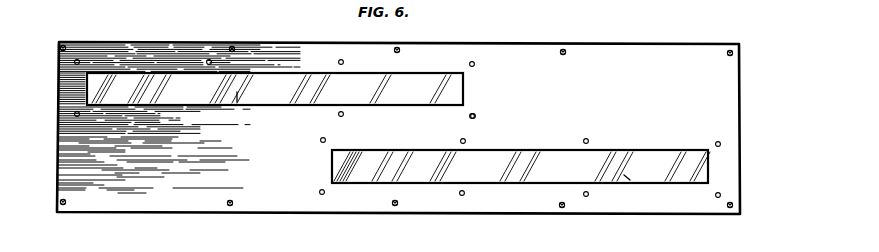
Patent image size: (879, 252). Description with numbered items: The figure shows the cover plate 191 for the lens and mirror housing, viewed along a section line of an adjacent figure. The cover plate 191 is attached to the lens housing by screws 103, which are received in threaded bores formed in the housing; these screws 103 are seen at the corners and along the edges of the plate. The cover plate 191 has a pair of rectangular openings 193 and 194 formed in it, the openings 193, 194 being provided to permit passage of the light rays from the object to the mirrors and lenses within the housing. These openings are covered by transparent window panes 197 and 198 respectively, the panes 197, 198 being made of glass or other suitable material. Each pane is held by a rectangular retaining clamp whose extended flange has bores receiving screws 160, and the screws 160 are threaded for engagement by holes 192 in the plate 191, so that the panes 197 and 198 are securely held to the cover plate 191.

The screws 103 is at (61, 46).
The screws 160 is at (207, 60).
The holes 192 is at (75, 113).
The rectangular opening 194 is at (256, 72).
The transparent window pane 198 is at (237, 92).
The rectangular opening 193 is at (528, 150).
The transparent window pane 197 is at (624, 175).
The cover plate 191 is at (152, 211).